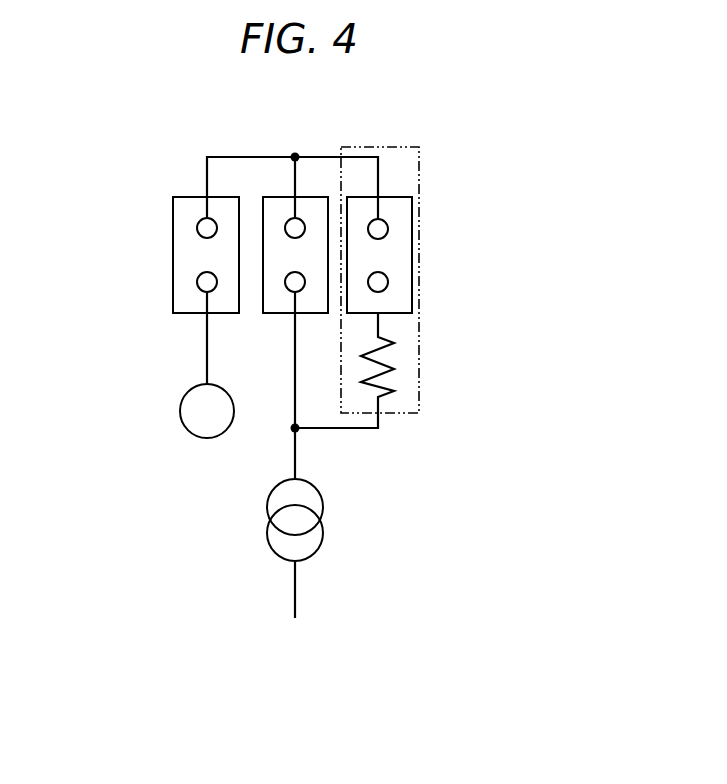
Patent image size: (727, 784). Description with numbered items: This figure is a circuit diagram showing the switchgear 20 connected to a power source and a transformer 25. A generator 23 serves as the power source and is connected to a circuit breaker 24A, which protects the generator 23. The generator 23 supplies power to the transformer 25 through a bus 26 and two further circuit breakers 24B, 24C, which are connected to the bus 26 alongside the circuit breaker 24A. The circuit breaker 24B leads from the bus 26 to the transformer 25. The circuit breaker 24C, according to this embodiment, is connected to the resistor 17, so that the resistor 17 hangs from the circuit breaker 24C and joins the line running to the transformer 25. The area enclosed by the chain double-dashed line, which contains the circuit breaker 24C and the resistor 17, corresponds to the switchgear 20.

The bus 26 is at (212, 154).
The circuit breaker 24A is at (190, 254).
The circuit breaker 24B is at (305, 205).
The circuit breaker 24C is at (400, 256).
The switchgear 20 is at (420, 190).
The resistor 17 is at (390, 386).
The generator 23 is at (181, 424).
The transformer 25 is at (272, 530).